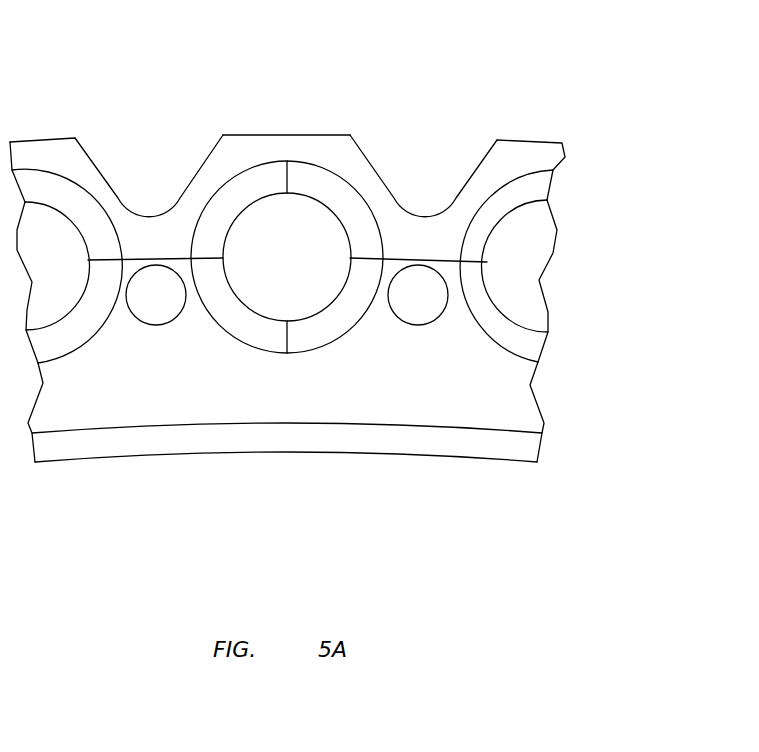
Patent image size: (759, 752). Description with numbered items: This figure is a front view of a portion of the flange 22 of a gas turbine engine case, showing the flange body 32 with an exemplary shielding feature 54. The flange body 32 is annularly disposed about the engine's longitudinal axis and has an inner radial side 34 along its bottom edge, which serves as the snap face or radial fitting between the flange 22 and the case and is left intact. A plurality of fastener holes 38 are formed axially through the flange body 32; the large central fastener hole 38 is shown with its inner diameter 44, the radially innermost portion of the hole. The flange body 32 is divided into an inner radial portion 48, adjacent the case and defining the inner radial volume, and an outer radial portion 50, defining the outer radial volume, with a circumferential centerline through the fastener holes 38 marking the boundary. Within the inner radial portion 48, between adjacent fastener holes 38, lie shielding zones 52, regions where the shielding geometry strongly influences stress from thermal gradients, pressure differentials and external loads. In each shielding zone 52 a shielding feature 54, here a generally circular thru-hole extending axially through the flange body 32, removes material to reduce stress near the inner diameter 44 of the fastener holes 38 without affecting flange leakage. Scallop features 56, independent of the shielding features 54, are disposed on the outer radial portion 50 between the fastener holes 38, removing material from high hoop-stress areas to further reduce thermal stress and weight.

The flange 22 is at (477, 80).
The flange body 32 is at (108, 413).
The inner radial side 34 is at (283, 427).
The fastener hole 38 is at (332, 212).
The inner diameter 44 is at (287, 321).
The inner radial portion 48 is at (518, 372).
The outer radial portion 50 is at (552, 155).
The shielding zone 52 is at (187, 350).
The shielding feature 54 is at (156, 326).
The scallop feature 56 is at (160, 158).